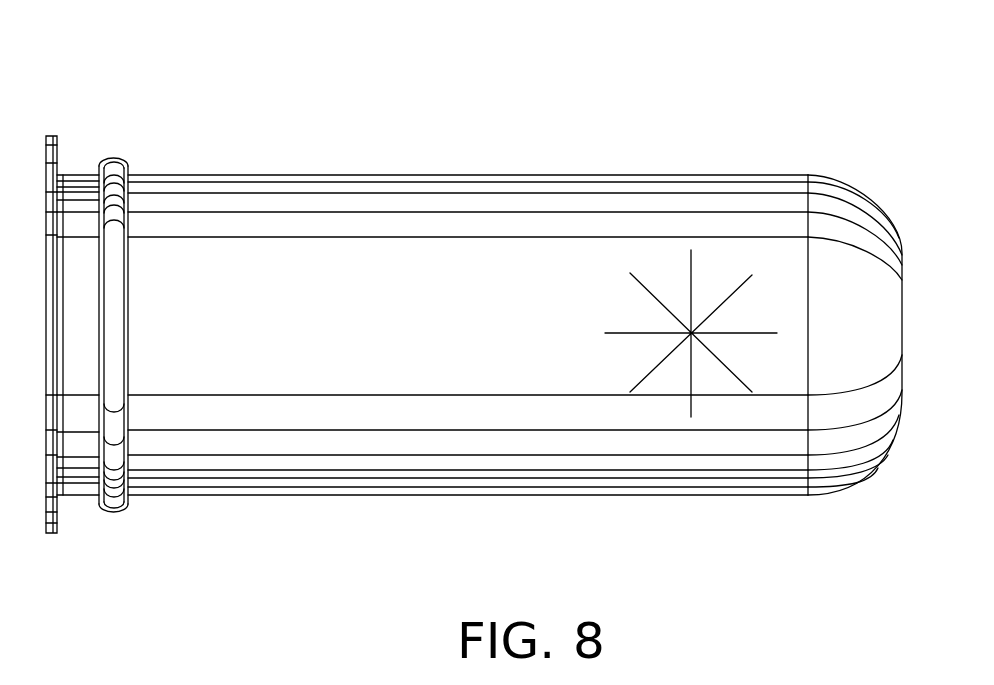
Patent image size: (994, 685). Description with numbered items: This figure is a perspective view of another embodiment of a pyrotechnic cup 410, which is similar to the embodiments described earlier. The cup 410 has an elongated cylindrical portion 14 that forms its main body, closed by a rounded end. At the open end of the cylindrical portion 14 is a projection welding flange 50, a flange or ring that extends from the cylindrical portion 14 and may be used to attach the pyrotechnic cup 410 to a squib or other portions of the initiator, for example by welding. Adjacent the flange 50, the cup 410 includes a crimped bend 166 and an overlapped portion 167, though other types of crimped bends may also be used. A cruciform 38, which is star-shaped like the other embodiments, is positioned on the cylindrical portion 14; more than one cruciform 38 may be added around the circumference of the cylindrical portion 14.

The projection welding flange 50 is at (60, 137).
The cylindrical portion 14 is at (420, 212).
The crimped bend 166 is at (122, 157).
The overlapped portion 167 is at (118, 143).
The pyrotechnic cup 410 is at (715, 163).
The cruciform 38 is at (737, 288).